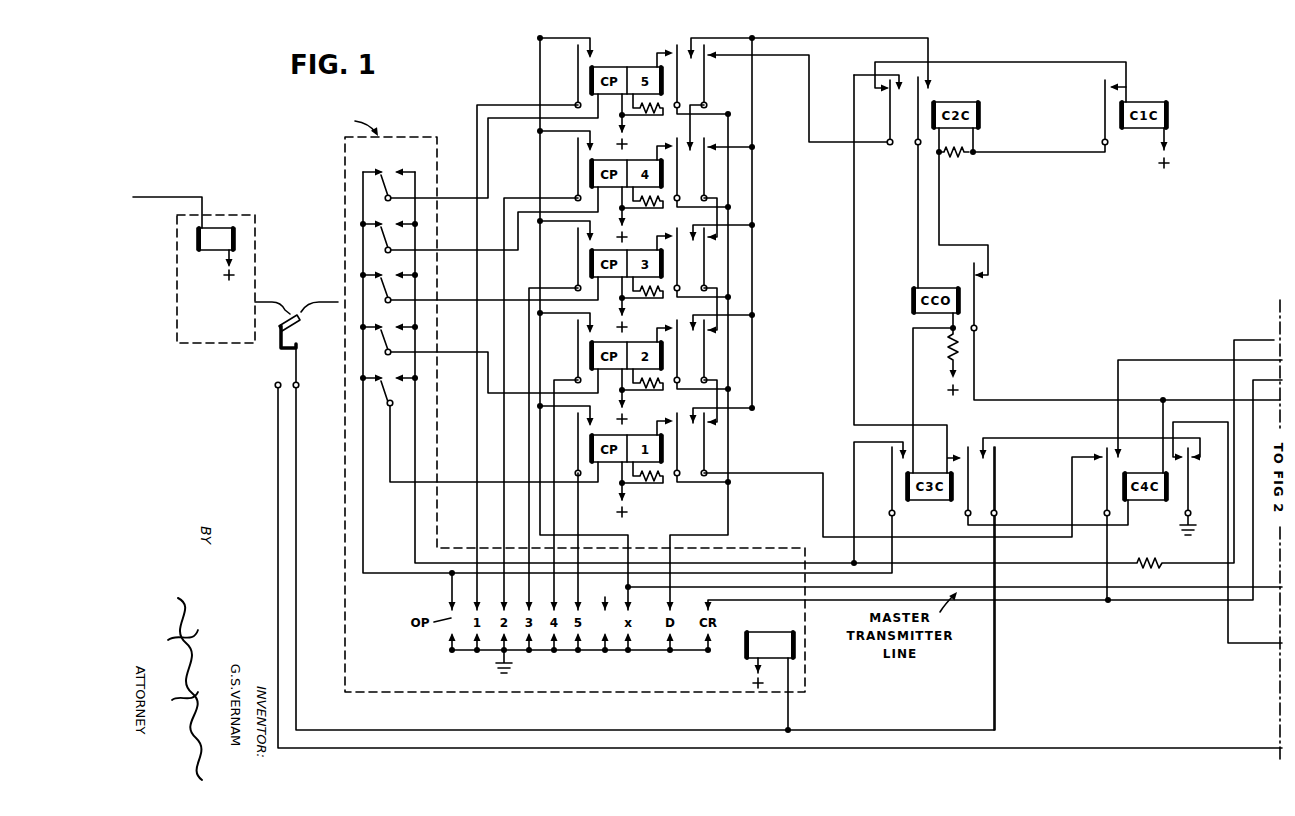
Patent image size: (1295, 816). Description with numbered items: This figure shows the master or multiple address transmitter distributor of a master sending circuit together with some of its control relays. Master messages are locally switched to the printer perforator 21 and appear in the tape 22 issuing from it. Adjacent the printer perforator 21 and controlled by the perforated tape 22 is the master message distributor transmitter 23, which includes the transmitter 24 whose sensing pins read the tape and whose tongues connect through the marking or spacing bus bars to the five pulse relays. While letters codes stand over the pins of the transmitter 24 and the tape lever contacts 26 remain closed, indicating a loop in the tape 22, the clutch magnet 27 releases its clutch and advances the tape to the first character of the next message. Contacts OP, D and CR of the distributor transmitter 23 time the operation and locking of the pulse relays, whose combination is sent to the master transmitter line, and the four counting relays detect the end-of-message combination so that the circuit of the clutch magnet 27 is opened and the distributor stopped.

The printer perforator 21 is at (196, 352).
The tape 22 is at (273, 300).
The master message distributor transmitter 23 is at (341, 504).
The transmitter 24 is at (378, 205).
The tape lever contacts 26 is at (286, 368).
The clutch magnet 27 is at (782, 632).